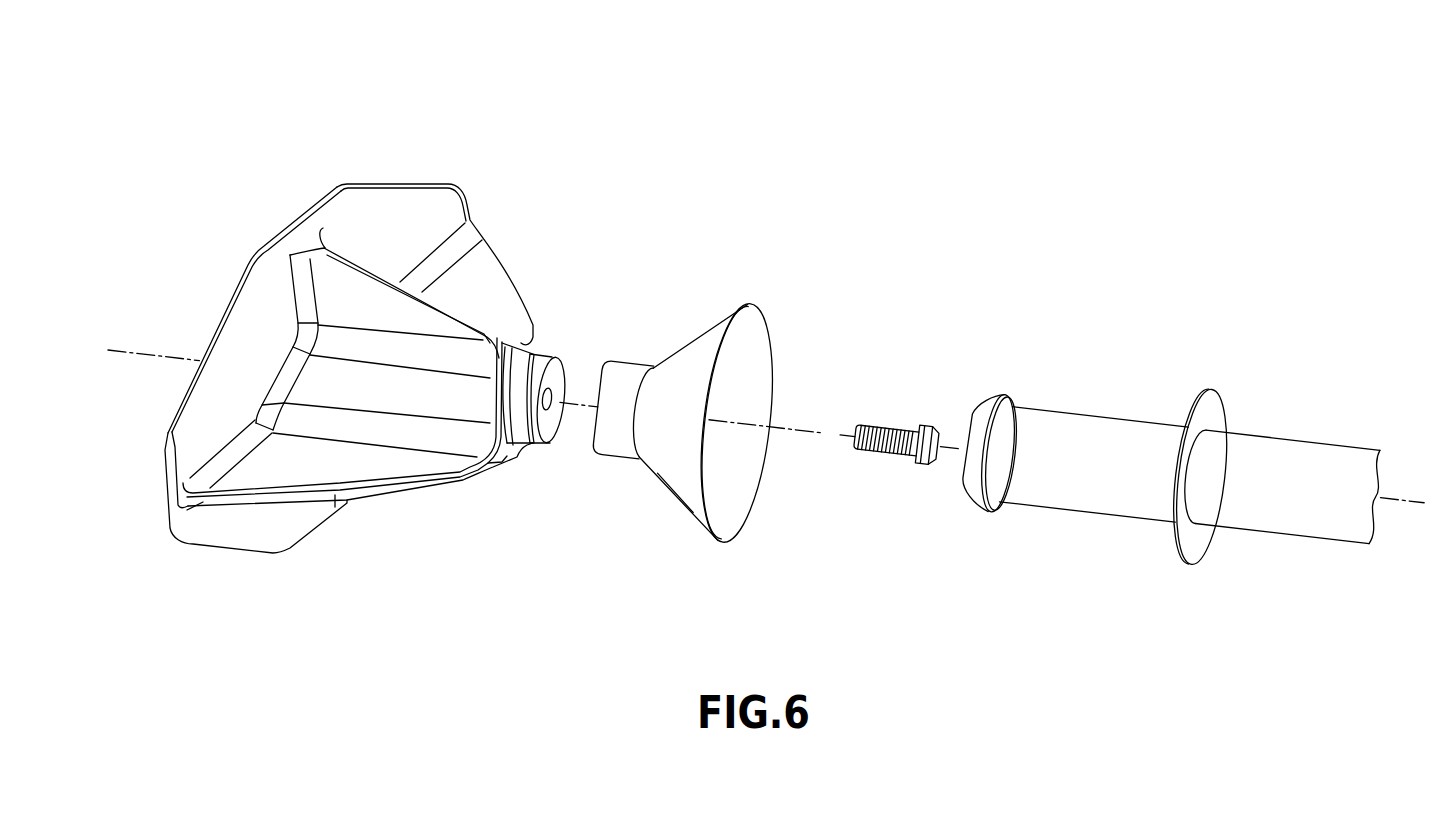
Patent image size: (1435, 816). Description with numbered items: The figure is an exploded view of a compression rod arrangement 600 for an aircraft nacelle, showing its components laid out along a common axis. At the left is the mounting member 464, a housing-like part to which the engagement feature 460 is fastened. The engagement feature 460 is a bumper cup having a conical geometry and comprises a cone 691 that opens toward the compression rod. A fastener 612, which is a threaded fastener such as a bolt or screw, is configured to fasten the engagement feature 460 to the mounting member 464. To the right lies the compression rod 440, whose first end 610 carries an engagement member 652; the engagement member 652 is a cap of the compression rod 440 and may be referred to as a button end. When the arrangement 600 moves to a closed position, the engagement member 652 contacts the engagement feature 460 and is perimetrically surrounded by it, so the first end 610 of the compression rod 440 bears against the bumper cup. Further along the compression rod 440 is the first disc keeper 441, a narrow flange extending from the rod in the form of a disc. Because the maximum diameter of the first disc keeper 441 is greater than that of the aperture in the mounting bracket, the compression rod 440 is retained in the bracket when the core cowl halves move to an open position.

The arrangement 600 is at (1060, 144).
The first end 610 is at (1170, 371).
The mounting member 464 is at (400, 184).
The engagement feature 460 is at (702, 328).
The cone 691 is at (688, 477).
The fastener 612 is at (887, 428).
The engagement member 652 is at (983, 407).
The compression rod 440 is at (1093, 430).
The first disc keeper 441 is at (1215, 388).